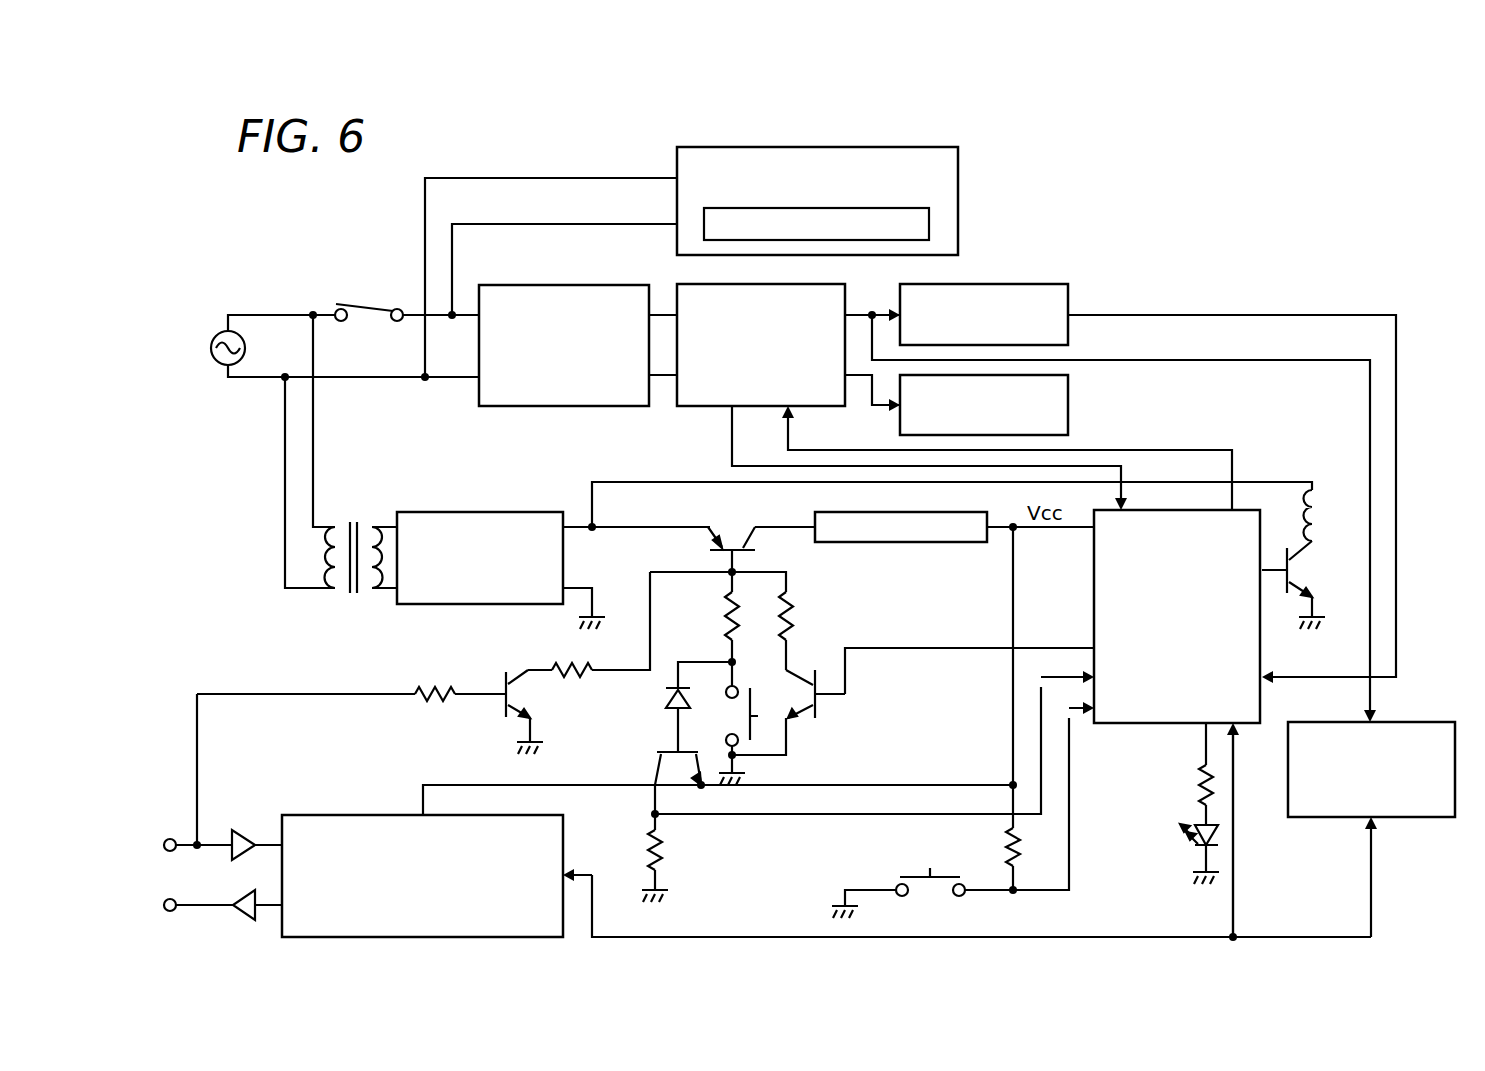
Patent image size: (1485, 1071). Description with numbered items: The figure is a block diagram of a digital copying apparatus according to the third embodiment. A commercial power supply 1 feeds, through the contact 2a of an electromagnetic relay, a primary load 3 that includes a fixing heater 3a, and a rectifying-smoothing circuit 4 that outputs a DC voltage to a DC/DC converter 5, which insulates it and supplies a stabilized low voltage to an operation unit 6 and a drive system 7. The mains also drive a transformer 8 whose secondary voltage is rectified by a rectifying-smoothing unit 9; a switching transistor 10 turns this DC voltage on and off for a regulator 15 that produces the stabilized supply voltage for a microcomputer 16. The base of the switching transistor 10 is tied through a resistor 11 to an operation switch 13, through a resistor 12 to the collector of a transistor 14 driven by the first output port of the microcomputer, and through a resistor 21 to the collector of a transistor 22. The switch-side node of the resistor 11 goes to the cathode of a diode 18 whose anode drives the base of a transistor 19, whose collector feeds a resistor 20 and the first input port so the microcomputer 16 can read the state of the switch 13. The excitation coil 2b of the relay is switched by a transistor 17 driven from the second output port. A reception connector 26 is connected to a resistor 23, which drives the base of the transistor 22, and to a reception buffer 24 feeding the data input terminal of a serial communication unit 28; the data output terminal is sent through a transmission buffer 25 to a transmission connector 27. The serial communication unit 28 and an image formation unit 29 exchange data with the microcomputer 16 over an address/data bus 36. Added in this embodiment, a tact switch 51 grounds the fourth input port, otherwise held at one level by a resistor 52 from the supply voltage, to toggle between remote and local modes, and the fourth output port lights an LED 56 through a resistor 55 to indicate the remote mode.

The commercial power supply 1 is at (210, 345).
The contact of electromagnetic relay 2a is at (364, 300).
The excitation coil of electromagnetic relay 2b is at (1326, 516).
The primary load 3 is at (960, 172).
The fixing heater 3a is at (929, 224).
The rectifying-smoothing circuit 4 is at (522, 284).
The DC/DC converter 5 is at (850, 304).
The operation unit 6 is at (1069, 307).
The drive system 7 is at (1069, 412).
The transformer 8 is at (350, 523).
The rectifying-smoothing unit 9 is at (505, 512).
The switching transistor 10 is at (728, 533).
The resistor 11 is at (724, 614).
The resistor 12 is at (790, 605).
The operation switch 13 is at (744, 715).
The transistor 14 is at (806, 724).
The regulator 15 is at (905, 543).
The microcomputer 16 is at (1262, 537).
The transistor 17 is at (1304, 572).
The diode 18 is at (666, 702).
The transistor 19 is at (654, 758).
The resistor 20 is at (648, 859).
The resistor 21 is at (582, 678).
The transistor 22 is at (506, 675).
The resistor 23 is at (435, 685).
The reception buffer 24 is at (242, 828).
The transmission buffer 25 is at (239, 925).
The reception connector 26 is at (164, 845).
The transmission connector 27 is at (164, 905).
The serial communication unit 28 is at (360, 815).
The image formation unit 29 is at (1317, 819).
The address/data bus 36 is at (1237, 795).
The tact switch 51 is at (898, 878).
The resistor 52 is at (1009, 861).
The resistor 55 is at (1203, 773).
The LED 56 is at (1190, 844).